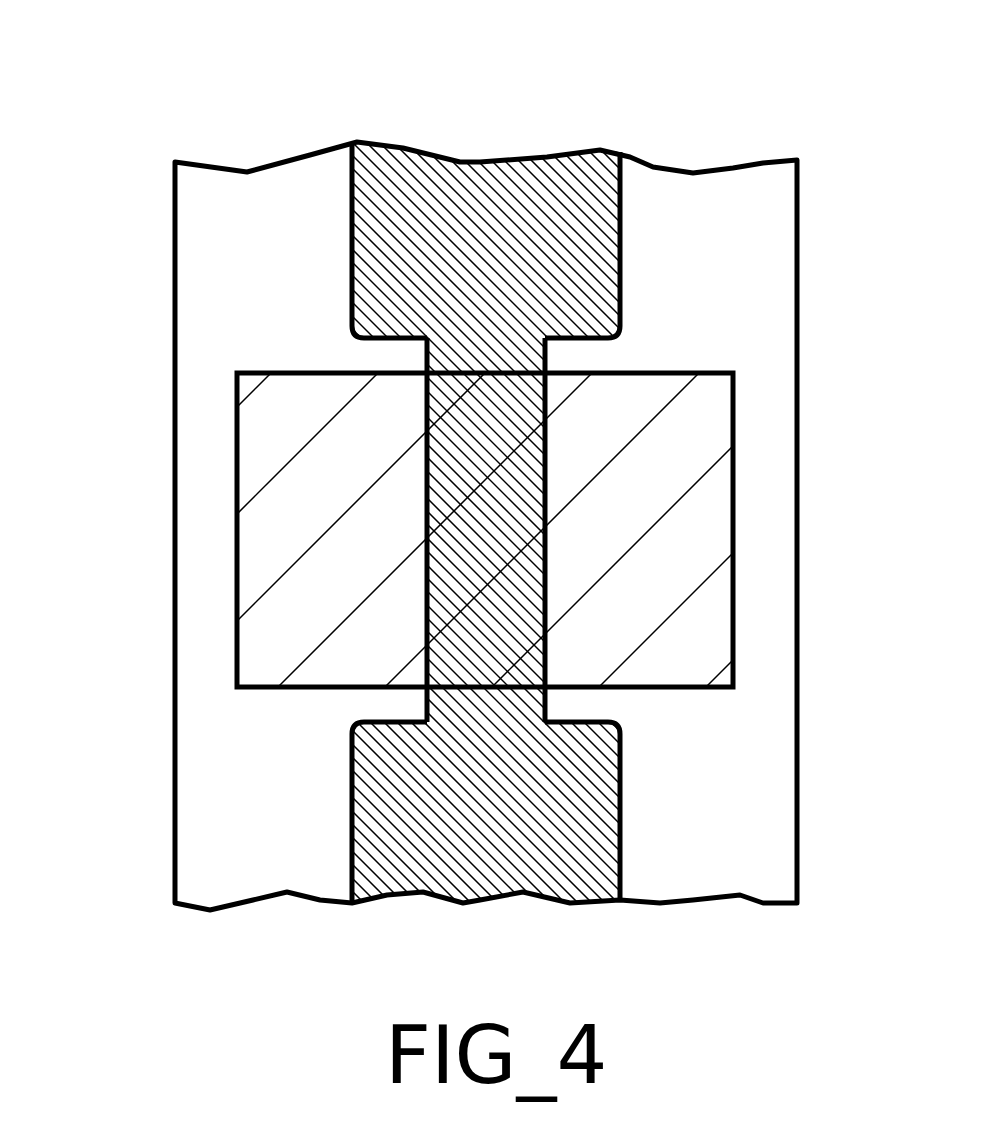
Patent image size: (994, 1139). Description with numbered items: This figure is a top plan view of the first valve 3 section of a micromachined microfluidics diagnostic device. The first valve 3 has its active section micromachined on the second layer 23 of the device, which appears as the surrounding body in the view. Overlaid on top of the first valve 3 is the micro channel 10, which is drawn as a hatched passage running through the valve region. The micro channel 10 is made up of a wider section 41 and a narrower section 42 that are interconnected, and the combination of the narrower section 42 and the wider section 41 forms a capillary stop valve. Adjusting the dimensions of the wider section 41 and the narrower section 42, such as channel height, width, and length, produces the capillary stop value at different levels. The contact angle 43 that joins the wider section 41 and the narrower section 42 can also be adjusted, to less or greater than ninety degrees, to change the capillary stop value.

The micro channel 10 is at (530, 143).
The second layer 23 is at (742, 318).
The first valve 3 is at (672, 560).
The wider section 41 is at (463, 245).
The narrower section 42 is at (467, 553).
The contact angle 43 is at (538, 327).